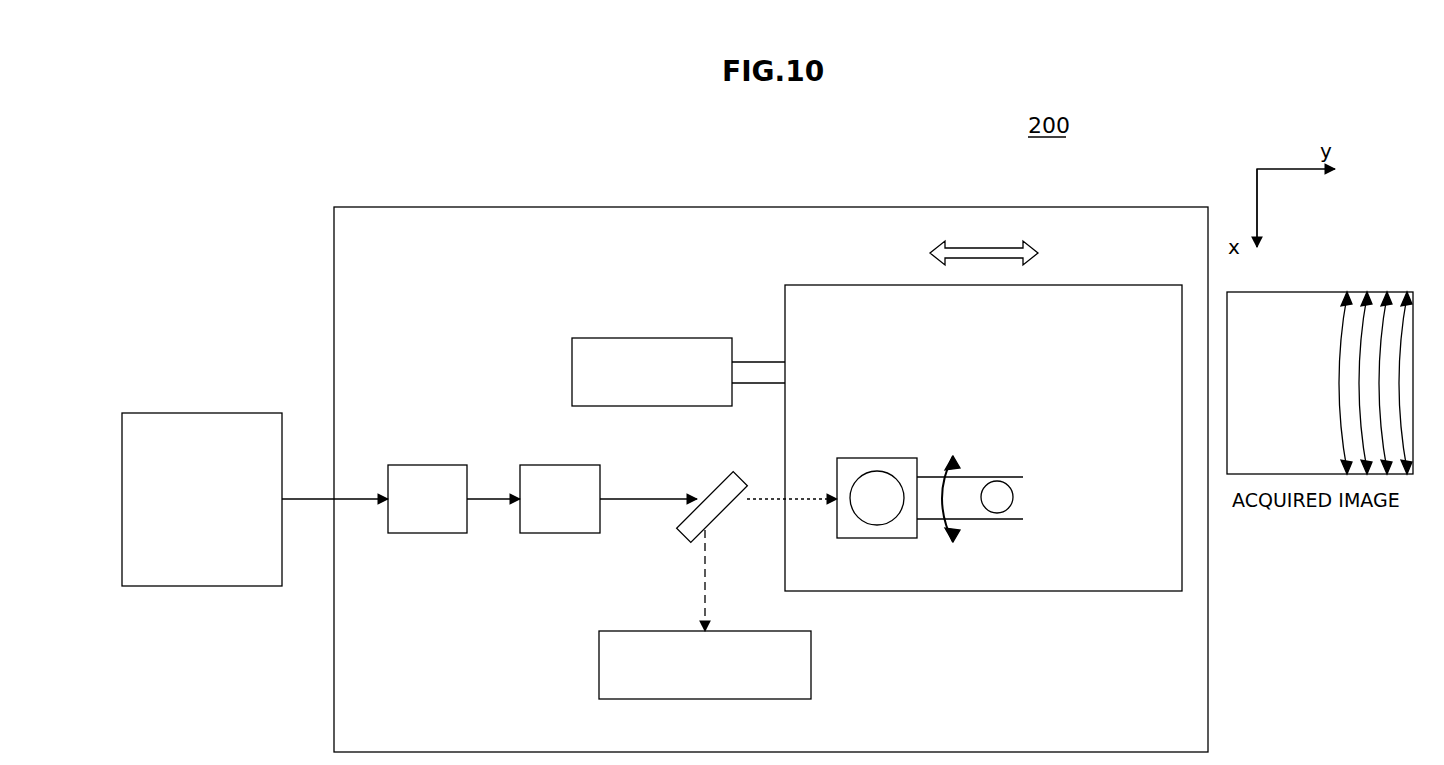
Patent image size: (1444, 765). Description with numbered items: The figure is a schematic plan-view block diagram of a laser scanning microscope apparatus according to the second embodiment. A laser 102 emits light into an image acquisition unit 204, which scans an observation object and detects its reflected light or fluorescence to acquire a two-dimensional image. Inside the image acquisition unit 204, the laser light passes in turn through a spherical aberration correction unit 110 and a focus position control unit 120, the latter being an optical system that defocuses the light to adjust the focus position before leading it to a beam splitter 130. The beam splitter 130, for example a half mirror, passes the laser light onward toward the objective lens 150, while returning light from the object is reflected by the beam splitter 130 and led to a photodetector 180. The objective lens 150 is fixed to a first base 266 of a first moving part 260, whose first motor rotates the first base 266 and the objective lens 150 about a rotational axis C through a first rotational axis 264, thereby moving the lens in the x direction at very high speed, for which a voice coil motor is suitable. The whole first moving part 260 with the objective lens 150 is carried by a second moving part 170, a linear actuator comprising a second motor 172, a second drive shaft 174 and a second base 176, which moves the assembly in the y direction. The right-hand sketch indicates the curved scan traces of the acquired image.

The laser 102 is at (234, 413).
The spherical aberration correction unit 110 is at (440, 465).
The focus position control unit 120 is at (572, 465).
The beam splitter 130 is at (712, 482).
The objective lens 150 is at (882, 522).
The second moving part 170 is at (877, 412).
The second motor 172 is at (688, 338).
The second drive shaft 174 is at (745, 362).
The second base 176 is at (1087, 285).
The photodetector 180 is at (735, 700).
The image acquisition unit 204 is at (815, 207).
The first moving part 260 is at (930, 528).
The first rotational axis 264 is at (988, 477).
The first base 266 is at (890, 458).
The rotational axis C is at (999, 513).